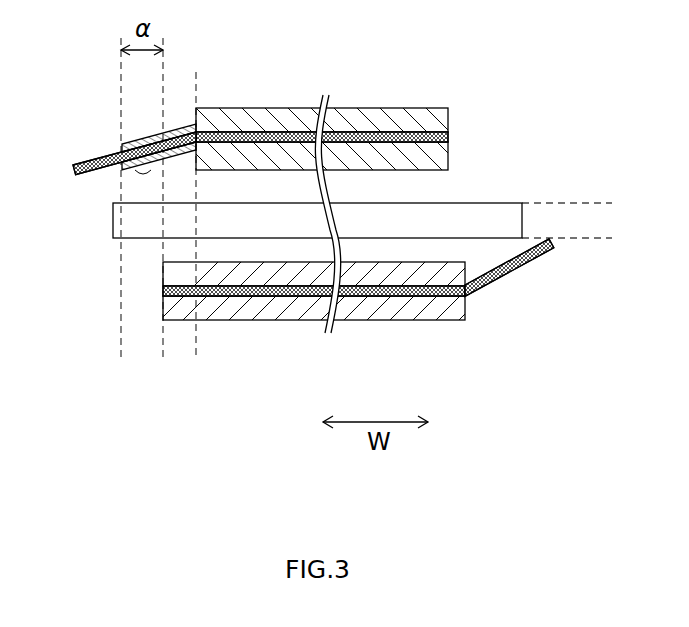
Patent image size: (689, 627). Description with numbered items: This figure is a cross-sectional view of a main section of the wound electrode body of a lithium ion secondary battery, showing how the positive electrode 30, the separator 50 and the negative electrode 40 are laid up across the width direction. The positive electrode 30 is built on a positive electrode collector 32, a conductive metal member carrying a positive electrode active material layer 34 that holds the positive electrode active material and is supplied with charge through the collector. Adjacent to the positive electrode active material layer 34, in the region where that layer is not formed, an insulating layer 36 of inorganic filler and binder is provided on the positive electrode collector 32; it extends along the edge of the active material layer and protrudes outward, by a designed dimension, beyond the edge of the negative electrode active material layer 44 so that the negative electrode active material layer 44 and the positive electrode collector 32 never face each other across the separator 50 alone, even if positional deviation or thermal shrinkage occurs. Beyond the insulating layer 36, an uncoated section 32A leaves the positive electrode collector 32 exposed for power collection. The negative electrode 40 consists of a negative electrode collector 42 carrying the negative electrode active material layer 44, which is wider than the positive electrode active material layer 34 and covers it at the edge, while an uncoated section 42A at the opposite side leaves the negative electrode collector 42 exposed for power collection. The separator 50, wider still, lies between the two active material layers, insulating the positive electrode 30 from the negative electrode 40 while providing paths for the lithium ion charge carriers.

The positive electrode 30 is at (342, 103).
The positive electrode collector 32 is at (448, 137).
The uncoated section 32A is at (88, 163).
The positive electrode active material layer 34 is at (448, 118).
The insulating layer 36 is at (147, 138).
The negative electrode 40 is at (308, 323).
The negative electrode collector 42 is at (314, 291).
The uncoated section 42A is at (525, 264).
The negative electrode active material layer 44 is at (170, 276).
The separator 50 is at (113, 220).